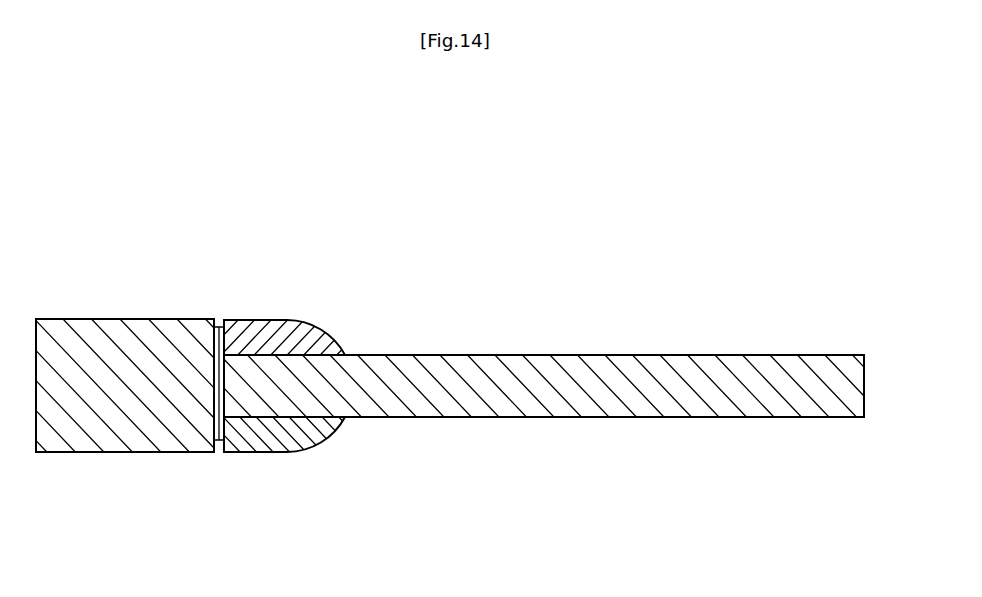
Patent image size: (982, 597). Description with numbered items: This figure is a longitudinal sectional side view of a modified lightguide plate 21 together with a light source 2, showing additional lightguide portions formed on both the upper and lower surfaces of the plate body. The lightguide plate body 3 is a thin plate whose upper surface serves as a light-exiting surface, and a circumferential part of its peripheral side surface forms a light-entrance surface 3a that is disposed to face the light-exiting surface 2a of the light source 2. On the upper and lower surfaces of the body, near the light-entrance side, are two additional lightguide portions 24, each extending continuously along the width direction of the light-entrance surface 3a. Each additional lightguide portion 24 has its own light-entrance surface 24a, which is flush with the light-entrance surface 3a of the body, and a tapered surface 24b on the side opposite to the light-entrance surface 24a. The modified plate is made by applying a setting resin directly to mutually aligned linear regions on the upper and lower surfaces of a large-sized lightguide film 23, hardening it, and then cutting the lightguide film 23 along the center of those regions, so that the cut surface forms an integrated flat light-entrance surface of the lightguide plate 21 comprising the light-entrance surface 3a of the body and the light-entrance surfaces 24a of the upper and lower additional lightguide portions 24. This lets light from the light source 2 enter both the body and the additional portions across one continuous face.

The light source 2 is at (125, 319).
The light-exiting surface 2a is at (224, 396).
The lightguide plate body 3 is at (637, 418).
The light-entrance surface 3a is at (214, 398).
The lightguide plate 21 is at (708, 266).
The lightguide film 23 is at (542, 355).
The additional lightguide portion 24 is at (288, 320).
The light-entrance surface 24a is at (216, 326).
The tapered surface 24b is at (337, 343).